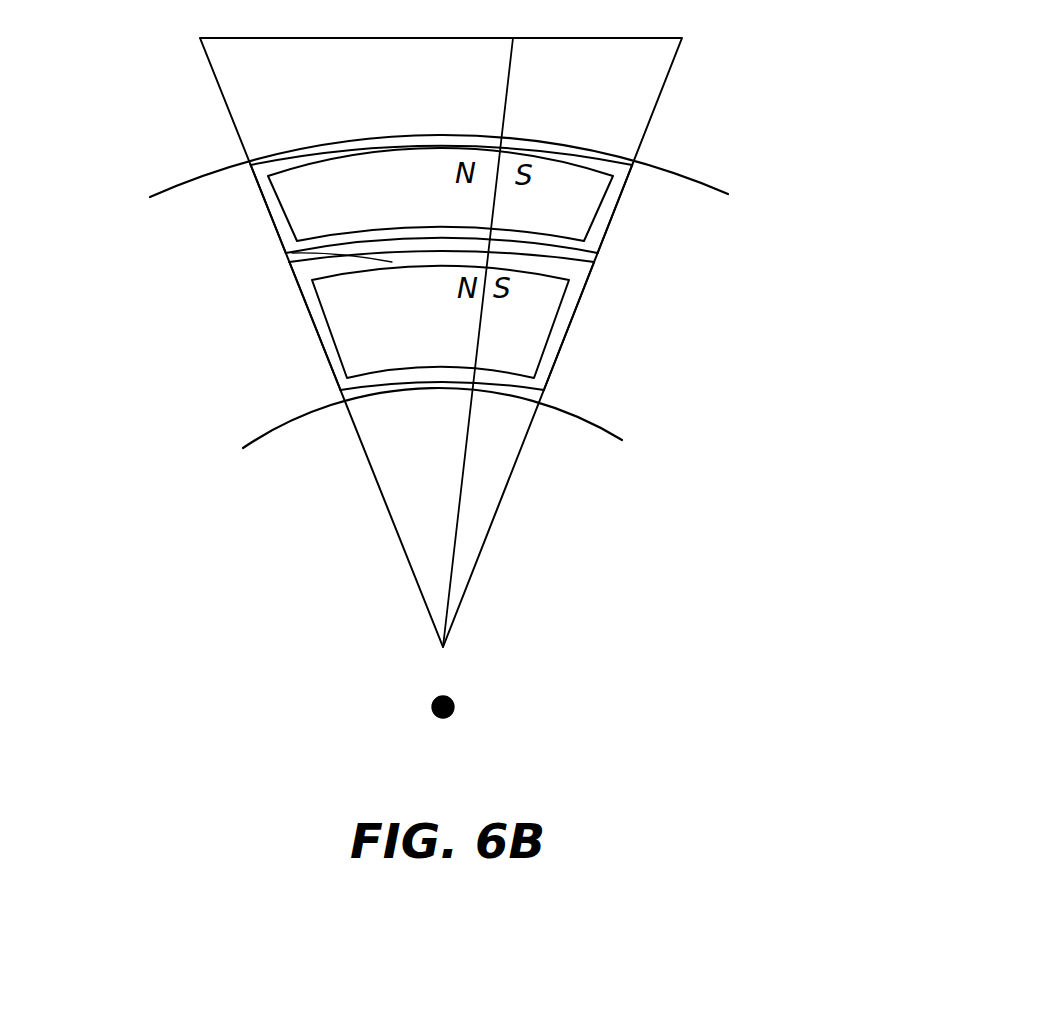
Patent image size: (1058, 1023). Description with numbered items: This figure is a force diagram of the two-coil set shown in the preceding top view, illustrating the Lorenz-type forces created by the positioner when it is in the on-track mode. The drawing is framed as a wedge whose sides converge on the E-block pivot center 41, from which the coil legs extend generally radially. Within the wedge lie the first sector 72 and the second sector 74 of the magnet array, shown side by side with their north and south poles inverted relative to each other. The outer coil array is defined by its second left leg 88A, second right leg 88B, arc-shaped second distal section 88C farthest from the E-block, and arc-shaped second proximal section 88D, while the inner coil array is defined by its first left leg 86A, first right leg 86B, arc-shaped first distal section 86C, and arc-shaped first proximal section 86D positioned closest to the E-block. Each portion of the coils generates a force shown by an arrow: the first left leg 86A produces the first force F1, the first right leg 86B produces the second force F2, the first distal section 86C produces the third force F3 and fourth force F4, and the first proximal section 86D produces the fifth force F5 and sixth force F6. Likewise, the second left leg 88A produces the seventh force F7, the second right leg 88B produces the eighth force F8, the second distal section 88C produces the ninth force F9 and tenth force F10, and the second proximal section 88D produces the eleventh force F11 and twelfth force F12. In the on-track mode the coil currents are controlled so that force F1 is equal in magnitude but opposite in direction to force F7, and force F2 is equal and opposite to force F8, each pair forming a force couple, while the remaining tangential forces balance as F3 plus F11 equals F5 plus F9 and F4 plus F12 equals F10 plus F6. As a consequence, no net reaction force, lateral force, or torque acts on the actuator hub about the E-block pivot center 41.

The E-block pivot center 41 is at (455, 707).
The first sector 72 is at (339, 202).
The second sector 74 is at (493, 352).
The first left leg 86A is at (330, 350).
The first right leg 86B is at (548, 360).
The first distal section 86C is at (287, 253).
The first proximal section 86D is at (378, 380).
The second left leg 88A is at (273, 215).
The second right leg 88B is at (615, 195).
The second distal section 88C is at (435, 140).
The second proximal section 88D is at (460, 232).
The first force F1 is at (317, 333).
The second force F2 is at (562, 350).
The third force F3 is at (372, 277).
The fourth force F4 is at (548, 280).
The fifth force F5 is at (377, 380).
The sixth force F6 is at (517, 392).
The seventh force F7 is at (260, 193).
The eighth force F8 is at (610, 223).
The ninth force F9 is at (347, 138).
The tenth force F10 is at (585, 148).
The eleventh force F11 is at (360, 230).
The twelfth force F12 is at (570, 200).